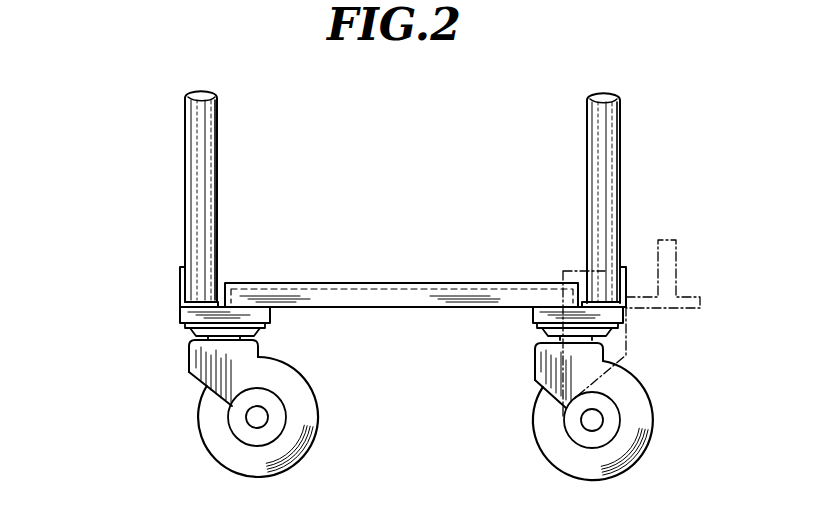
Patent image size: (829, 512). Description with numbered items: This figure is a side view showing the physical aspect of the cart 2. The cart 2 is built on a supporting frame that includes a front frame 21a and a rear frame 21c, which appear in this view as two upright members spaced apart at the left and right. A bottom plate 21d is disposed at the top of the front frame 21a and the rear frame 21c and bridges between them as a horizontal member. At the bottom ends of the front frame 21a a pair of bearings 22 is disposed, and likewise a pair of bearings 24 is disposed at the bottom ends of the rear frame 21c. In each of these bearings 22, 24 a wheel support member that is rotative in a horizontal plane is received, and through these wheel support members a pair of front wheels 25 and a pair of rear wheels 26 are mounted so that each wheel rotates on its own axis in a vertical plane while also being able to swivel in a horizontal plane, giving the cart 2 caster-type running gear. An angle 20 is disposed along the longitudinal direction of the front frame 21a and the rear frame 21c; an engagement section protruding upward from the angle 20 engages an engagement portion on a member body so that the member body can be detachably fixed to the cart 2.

The cart 2 is at (475, 202).
The angle 20 is at (178, 286).
The front frame 21a is at (203, 152).
The rear frame 21c is at (610, 155).
The bottom plate 21d is at (343, 284).
The bearings 22 is at (193, 330).
The bearings 24 is at (598, 334).
The front wheels 25 is at (187, 429).
The rear wheels 26 is at (658, 430).